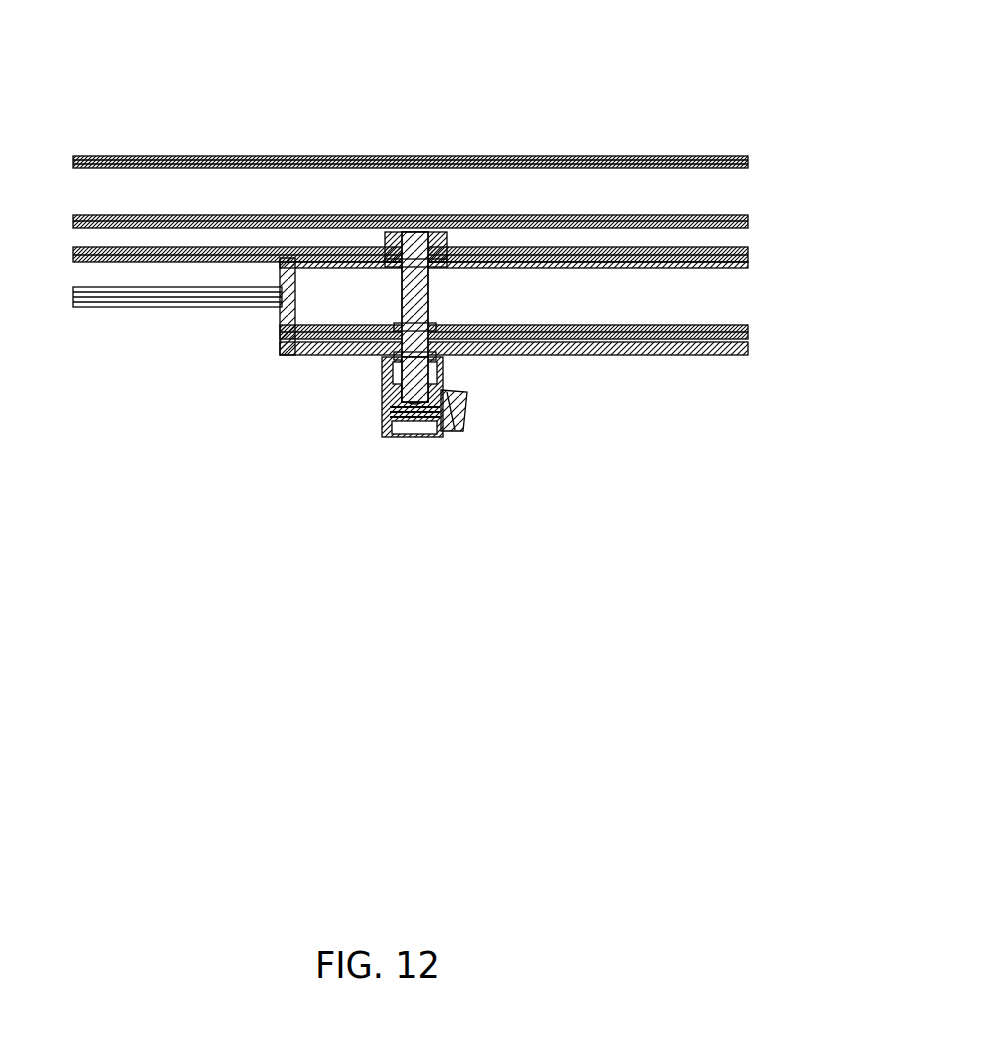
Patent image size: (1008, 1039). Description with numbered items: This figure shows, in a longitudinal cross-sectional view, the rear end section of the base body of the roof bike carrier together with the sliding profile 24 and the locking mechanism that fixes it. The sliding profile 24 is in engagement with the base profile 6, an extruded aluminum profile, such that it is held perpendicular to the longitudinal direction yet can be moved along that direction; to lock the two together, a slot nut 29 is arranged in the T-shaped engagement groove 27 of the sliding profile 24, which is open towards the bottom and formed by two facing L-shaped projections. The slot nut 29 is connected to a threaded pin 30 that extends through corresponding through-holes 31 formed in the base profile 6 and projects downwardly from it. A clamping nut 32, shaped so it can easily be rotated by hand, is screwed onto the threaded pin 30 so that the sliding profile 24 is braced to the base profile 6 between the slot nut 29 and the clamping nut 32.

The sliding profile 24 is at (602, 183).
The T-shaped engagement groove 27 is at (518, 238).
The base profile 6 is at (658, 297).
The slot nut 29 is at (437, 242).
The through-holes 31 is at (442, 262).
The threaded pin 30 is at (418, 356).
The clamping nut 32 is at (445, 427).